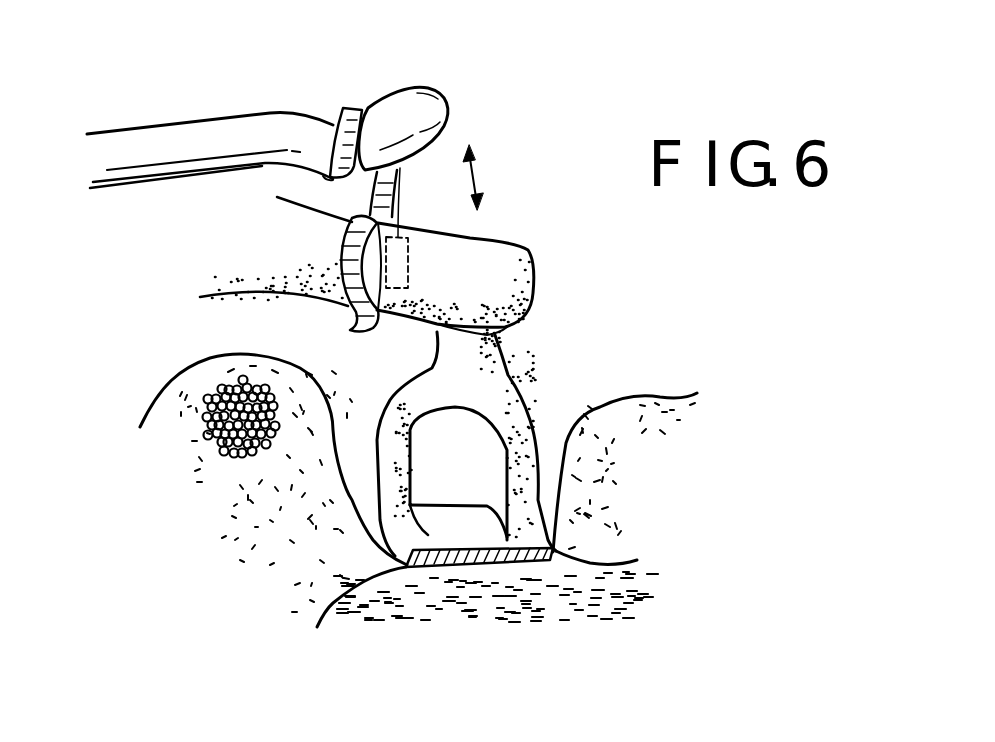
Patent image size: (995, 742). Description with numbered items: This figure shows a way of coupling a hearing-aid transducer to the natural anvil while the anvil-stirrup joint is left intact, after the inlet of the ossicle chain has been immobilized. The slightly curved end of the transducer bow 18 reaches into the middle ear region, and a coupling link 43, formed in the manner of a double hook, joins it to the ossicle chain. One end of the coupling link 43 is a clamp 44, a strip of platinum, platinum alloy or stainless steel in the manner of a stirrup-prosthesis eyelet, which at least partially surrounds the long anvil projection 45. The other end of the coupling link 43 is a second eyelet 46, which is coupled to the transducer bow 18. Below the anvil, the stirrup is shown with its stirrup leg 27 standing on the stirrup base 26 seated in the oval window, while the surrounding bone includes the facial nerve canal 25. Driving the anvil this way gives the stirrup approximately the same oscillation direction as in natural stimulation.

The transducer bow 18 is at (203, 128).
The second eyelet 46 is at (355, 106).
The coupling link 43 is at (436, 160).
The clamp 44 is at (347, 262).
The long anvil projection 45 is at (508, 272).
The facial nerve canal 25 is at (198, 408).
The stirrup leg 27 is at (382, 466).
The stirrup base 26 is at (432, 566).